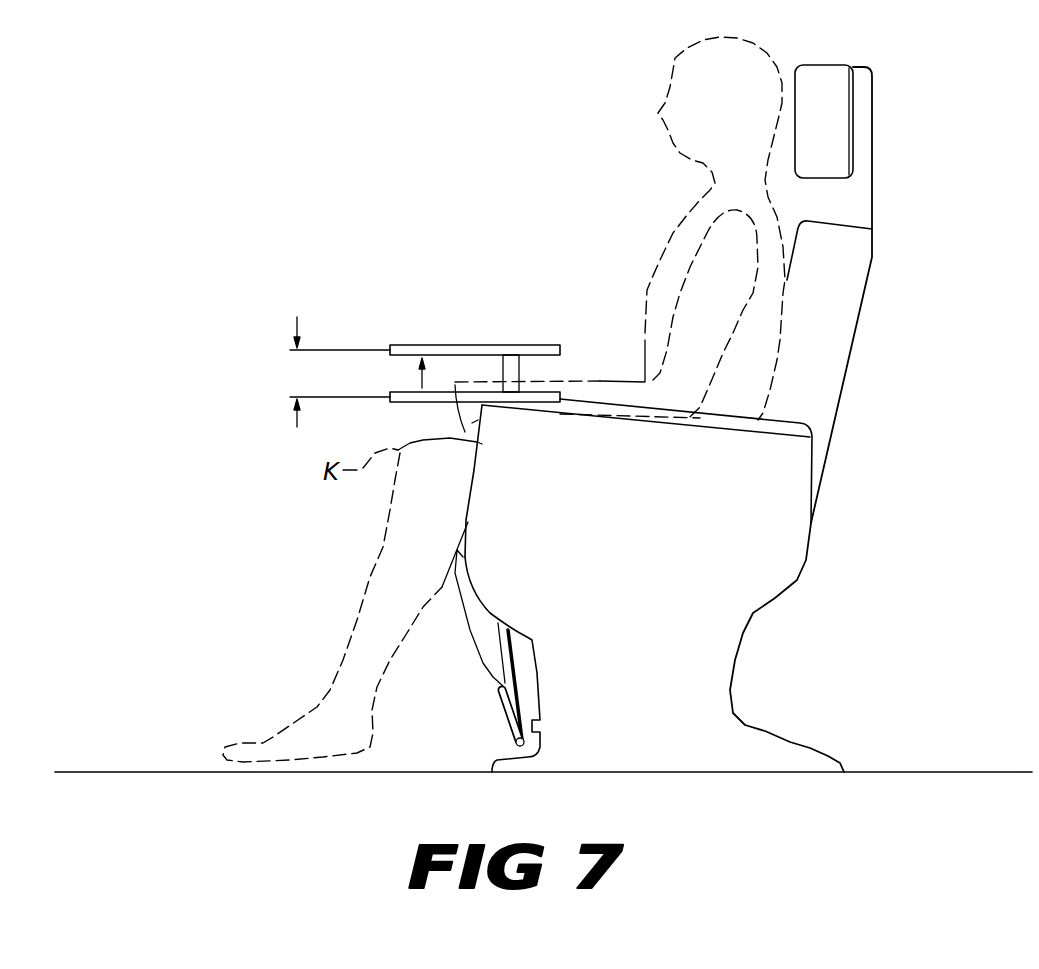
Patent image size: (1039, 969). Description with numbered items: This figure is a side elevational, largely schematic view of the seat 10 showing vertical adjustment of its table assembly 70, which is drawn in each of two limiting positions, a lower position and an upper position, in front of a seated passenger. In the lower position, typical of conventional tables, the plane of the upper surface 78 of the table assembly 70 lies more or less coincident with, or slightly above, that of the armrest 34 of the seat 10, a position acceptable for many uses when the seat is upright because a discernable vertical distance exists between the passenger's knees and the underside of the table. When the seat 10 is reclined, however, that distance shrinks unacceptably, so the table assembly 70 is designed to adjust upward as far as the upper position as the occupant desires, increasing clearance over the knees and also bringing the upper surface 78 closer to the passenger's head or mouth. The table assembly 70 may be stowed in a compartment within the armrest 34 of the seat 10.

The seat 10 is at (922, 78).
The armrest 34 is at (765, 422).
The table assembly 70 is at (381, 387).
The upper surface 78 is at (412, 345).